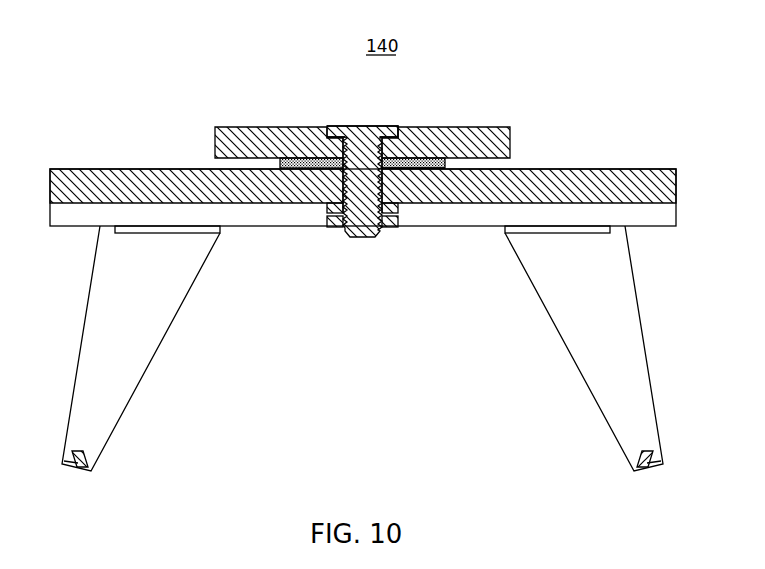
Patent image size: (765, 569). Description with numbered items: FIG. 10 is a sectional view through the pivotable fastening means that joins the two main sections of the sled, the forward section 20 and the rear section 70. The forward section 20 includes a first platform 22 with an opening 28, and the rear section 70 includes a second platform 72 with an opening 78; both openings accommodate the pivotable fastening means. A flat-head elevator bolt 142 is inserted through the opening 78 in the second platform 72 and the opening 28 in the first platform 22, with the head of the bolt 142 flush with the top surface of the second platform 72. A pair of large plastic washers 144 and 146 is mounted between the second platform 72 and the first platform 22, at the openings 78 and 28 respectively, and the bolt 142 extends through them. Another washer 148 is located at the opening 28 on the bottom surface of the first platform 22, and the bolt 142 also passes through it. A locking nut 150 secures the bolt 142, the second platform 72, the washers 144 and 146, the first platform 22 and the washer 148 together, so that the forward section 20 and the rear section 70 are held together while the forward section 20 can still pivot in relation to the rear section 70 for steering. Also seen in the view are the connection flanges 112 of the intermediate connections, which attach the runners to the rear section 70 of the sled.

The forward section 20 is at (375, 186).
The first platform 22 is at (67, 183).
The opening 28 is at (343, 188).
The rear section 70 is at (368, 135).
The second platform 72 is at (225, 137).
The opening 78 is at (371, 161).
The connection flange 112 is at (88, 351).
The flat-head elevator bolt 142 is at (355, 126).
The washer 144 is at (390, 182).
The washer 146 is at (413, 168).
The washer 148 is at (328, 213).
The locking nut 150 is at (338, 227).